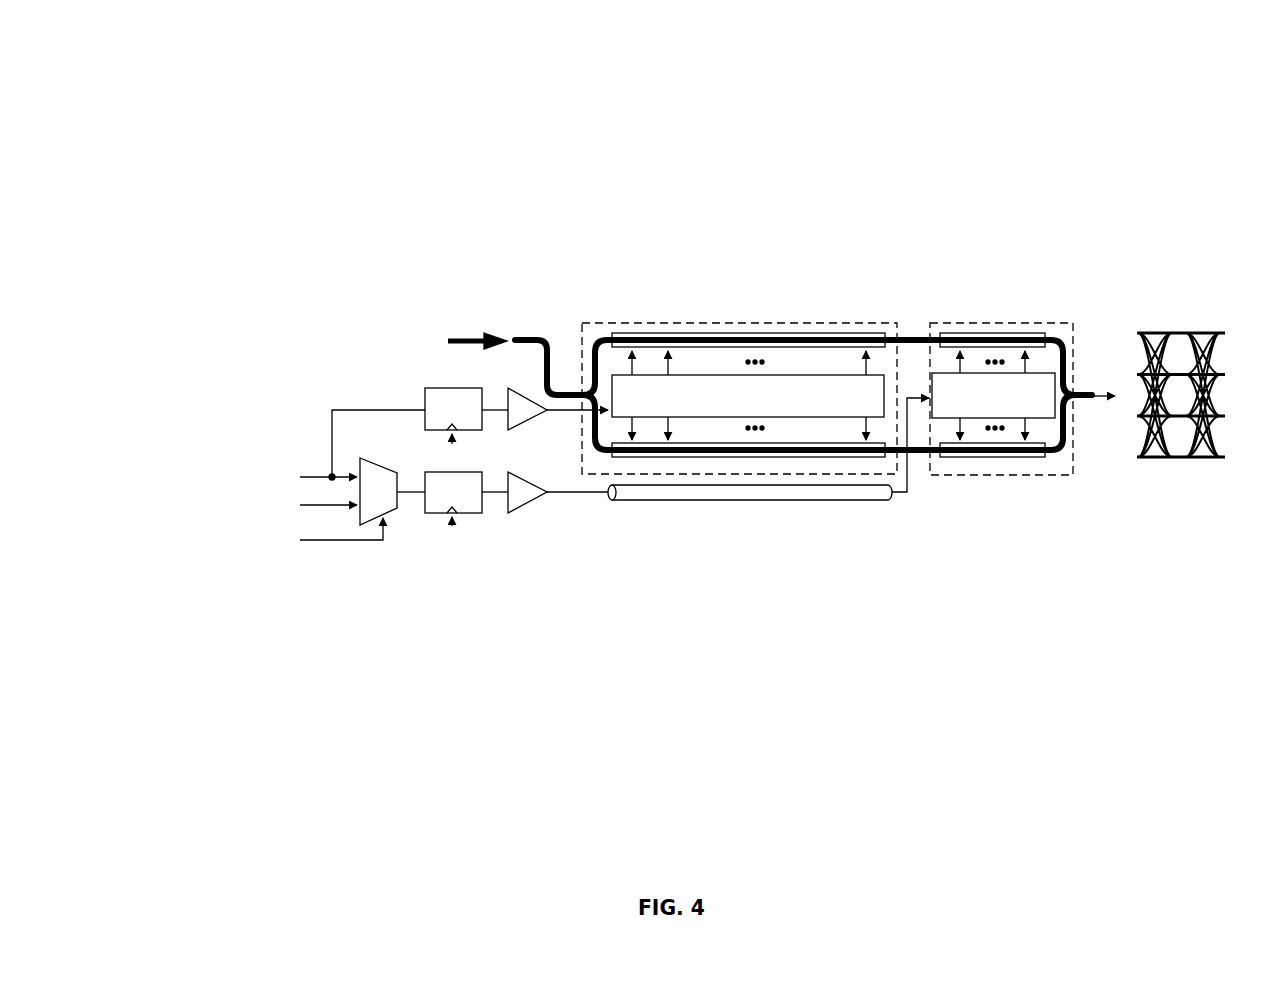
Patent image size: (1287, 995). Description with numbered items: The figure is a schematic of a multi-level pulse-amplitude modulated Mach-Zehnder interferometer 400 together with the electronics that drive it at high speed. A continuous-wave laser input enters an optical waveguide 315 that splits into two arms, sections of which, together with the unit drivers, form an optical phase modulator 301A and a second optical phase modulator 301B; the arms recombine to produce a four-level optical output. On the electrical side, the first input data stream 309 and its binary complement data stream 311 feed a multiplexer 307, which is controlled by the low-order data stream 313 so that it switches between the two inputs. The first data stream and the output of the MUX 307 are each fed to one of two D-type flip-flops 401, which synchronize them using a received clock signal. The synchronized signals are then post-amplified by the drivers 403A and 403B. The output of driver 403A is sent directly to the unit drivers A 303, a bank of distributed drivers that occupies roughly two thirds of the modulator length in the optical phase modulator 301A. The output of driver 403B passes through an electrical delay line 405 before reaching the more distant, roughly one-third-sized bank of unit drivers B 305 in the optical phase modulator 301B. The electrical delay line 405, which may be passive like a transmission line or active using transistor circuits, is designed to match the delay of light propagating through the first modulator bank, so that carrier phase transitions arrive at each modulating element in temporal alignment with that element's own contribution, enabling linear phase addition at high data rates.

The multi-level PAM MZI 400 is at (268, 110).
The flip-flops 401 is at (423, 483).
The input data stream Dat 1 309 is at (297, 490).
The input data stream DatB 1 311 is at (297, 515).
The input data stream Dat 0 313 is at (292, 548).
The multiplexer (MUX) 307 is at (390, 513).
The driver 403A is at (537, 417).
The driver 403B is at (517, 513).
The optical waveguide 315 is at (530, 333).
The optical phase modulator 301A is at (797, 317).
The optical phase modulator 301B is at (1018, 317).
The unit drivers A 303 is at (825, 406).
The unit drivers B 305 is at (1010, 415).
The electrical delay line 405 is at (755, 500).